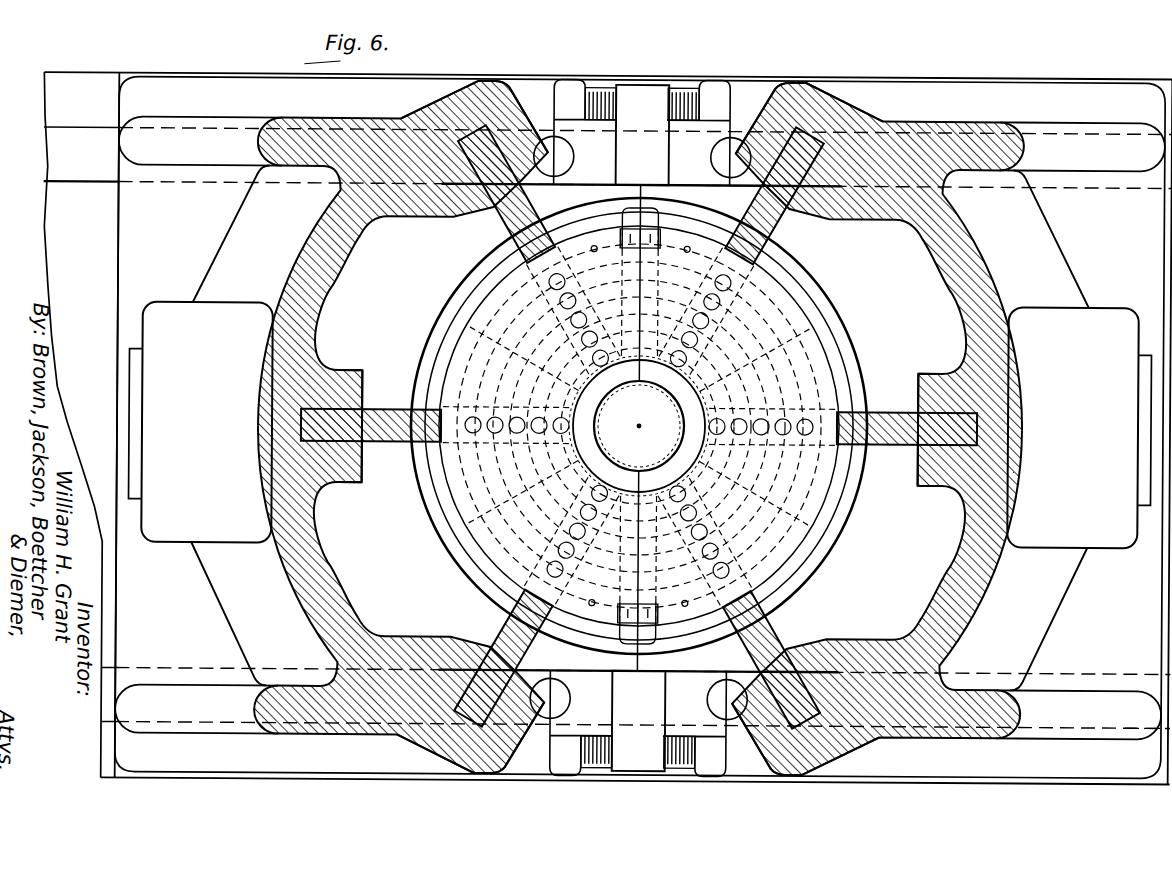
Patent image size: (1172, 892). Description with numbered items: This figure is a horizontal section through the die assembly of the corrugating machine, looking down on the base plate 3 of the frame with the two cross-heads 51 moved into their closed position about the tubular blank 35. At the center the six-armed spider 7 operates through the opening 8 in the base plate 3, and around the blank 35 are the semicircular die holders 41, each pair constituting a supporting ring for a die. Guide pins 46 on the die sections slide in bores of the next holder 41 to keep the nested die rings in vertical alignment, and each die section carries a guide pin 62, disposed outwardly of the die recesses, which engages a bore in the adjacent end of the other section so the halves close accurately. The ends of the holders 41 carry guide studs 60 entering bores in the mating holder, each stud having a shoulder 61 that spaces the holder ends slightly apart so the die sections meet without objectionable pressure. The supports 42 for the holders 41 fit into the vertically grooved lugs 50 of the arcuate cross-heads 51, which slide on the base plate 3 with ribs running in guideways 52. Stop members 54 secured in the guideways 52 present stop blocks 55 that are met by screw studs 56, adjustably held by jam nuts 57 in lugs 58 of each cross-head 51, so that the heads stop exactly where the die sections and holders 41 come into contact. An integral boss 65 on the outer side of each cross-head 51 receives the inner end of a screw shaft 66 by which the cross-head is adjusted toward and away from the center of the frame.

The base plate 3 is at (66, 280).
The six-armed spider 7 is at (824, 341).
The opening 8 is at (795, 272).
The tubular blank 35 is at (671, 448).
The die holder 41 is at (800, 302).
The support 42 is at (500, 201).
The guide pin 46 is at (475, 418).
The grooved lug 50 is at (942, 484).
The cross-head 51 is at (308, 294).
The guideway 52 is at (1160, 668).
The stop member 54 is at (681, 150).
The stop block 55 is at (637, 95).
The screw stud 56 is at (602, 92).
The jam nut 57 is at (565, 80).
The lug 58 is at (530, 80).
The guide stud 60 is at (583, 208).
The shoulder 61 is at (637, 441).
The guide pin 62 is at (639, 426).
The boss 65 is at (170, 305).
The screw shaft 66 is at (133, 366).